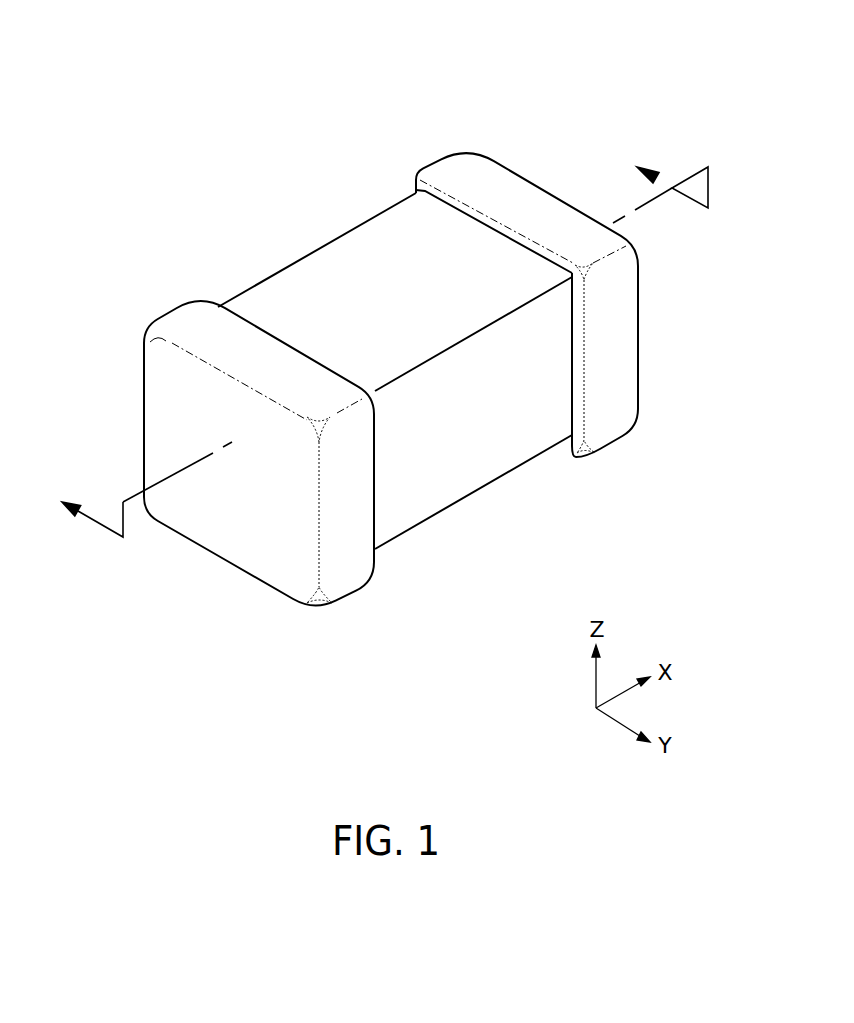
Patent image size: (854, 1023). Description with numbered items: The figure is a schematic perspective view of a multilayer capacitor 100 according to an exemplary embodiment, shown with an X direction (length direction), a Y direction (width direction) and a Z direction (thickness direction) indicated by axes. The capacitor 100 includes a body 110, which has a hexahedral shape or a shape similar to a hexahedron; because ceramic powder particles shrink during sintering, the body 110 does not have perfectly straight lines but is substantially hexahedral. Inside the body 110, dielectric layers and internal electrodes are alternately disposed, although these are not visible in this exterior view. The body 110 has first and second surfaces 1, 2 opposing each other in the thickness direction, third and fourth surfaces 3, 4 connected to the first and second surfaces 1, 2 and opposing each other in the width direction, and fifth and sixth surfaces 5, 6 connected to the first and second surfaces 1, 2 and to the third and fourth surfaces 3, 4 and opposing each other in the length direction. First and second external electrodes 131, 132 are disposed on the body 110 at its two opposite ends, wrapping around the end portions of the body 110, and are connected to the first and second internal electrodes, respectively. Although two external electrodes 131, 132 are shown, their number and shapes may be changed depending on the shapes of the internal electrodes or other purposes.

The multilayer capacitor 100 is at (334, 39).
The body 110 is at (288, 287).
The first external electrode 131 is at (188, 321).
The second external electrode 132 is at (450, 172).
The first surface 1 is at (410, 482).
The second surface 2 is at (461, 260).
The third surface 3 is at (235, 504).
The fourth surface 4 is at (607, 298).
The fifth surface 5 is at (502, 420).
The sixth surface 6 is at (368, 264).